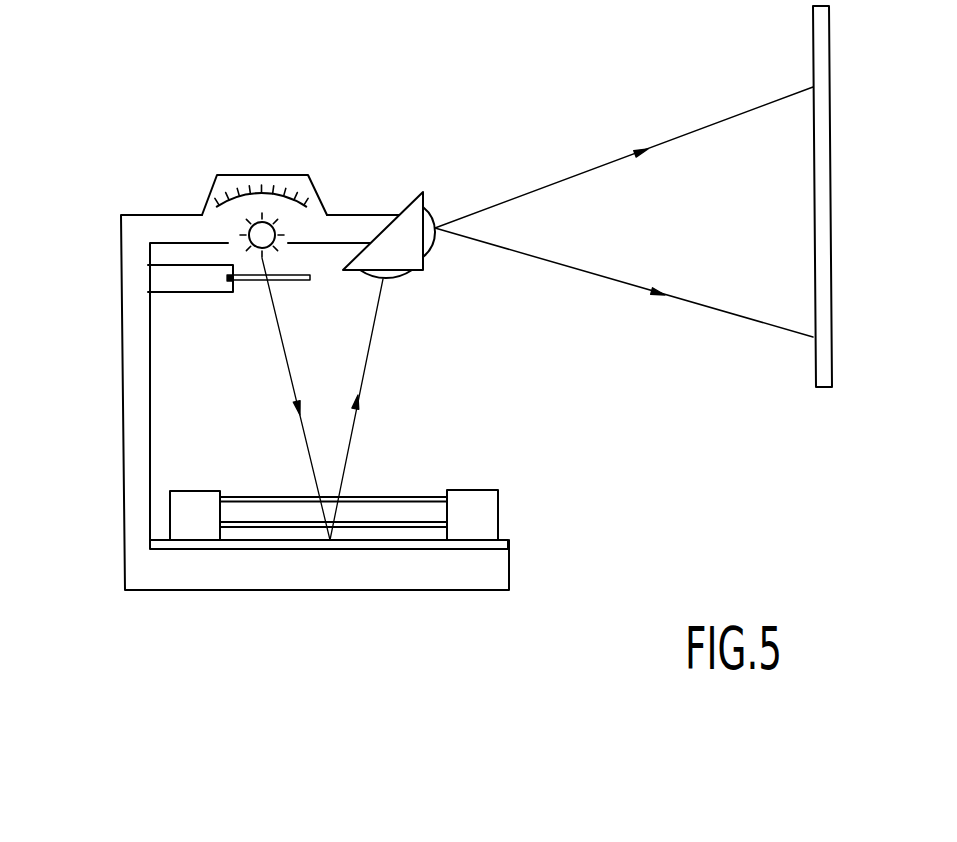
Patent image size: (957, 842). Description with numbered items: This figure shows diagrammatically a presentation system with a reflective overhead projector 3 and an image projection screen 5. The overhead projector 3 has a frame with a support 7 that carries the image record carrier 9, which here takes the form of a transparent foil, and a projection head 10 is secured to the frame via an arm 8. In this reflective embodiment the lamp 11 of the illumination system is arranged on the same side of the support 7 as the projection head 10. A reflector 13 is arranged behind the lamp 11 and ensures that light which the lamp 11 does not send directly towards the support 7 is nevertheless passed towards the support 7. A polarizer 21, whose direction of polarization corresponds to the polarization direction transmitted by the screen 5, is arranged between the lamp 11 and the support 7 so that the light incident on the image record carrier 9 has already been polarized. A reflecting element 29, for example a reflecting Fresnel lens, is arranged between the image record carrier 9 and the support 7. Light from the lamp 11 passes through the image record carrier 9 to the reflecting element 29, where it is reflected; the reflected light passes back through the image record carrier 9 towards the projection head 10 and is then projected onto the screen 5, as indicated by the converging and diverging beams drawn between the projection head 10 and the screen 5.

The overhead projector 3 is at (96, 630).
The image projection screen 5 is at (823, 372).
The support 7 is at (502, 542).
The arm 8 is at (135, 424).
The image record carrier 9 is at (438, 479).
The projection head 10 is at (410, 212).
The lamp 11 is at (245, 227).
The reflector 13 is at (306, 194).
The polarizer 21 is at (228, 279).
The reflecting element 29 is at (433, 545).